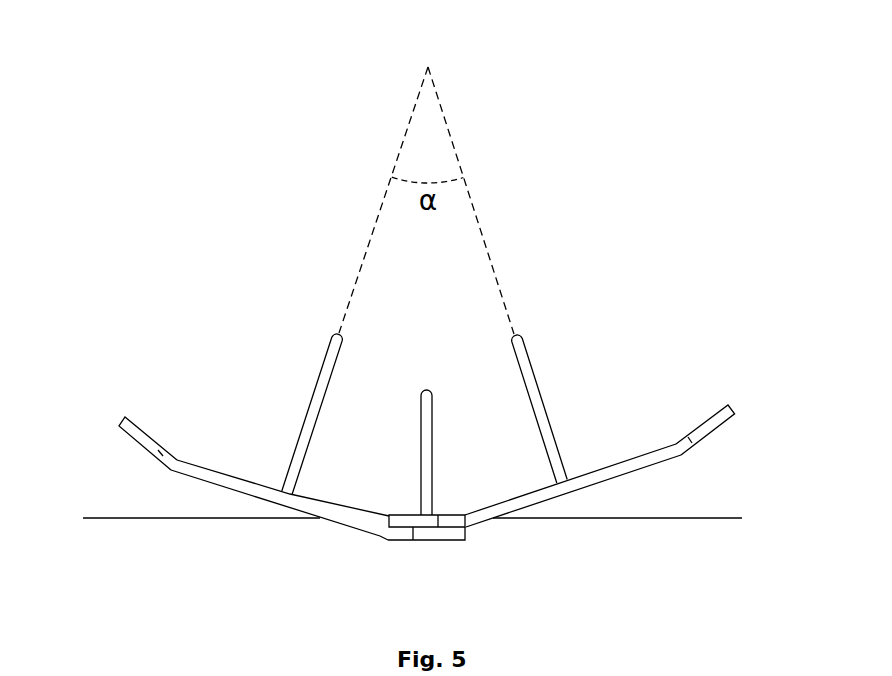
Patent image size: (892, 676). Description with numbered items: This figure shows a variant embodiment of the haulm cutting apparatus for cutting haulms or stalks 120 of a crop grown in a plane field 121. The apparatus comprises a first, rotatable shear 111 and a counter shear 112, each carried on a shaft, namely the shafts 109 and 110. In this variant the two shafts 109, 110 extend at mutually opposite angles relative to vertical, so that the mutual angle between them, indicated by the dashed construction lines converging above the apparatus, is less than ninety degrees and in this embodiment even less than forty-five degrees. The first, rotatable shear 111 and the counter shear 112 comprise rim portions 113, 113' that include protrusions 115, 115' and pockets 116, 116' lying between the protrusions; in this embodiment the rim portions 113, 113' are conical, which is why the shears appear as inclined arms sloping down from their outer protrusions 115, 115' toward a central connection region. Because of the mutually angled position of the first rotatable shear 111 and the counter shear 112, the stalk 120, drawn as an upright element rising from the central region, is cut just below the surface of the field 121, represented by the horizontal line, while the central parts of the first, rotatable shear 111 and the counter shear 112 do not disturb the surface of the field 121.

The shaft 109 is at (530, 372).
The shaft 110 is at (325, 371).
The first, rotatable shear 111 is at (620, 470).
The counter shear 112 is at (217, 473).
The rim portion 113 is at (592, 482).
The rim portion 113' is at (275, 536).
The protrusion 115 is at (744, 416).
The protrusion 115' is at (109, 431).
The pocket 116 is at (691, 410).
The pocket 116' is at (167, 424).
The stalk 120 is at (430, 440).
The field 121 is at (682, 518).